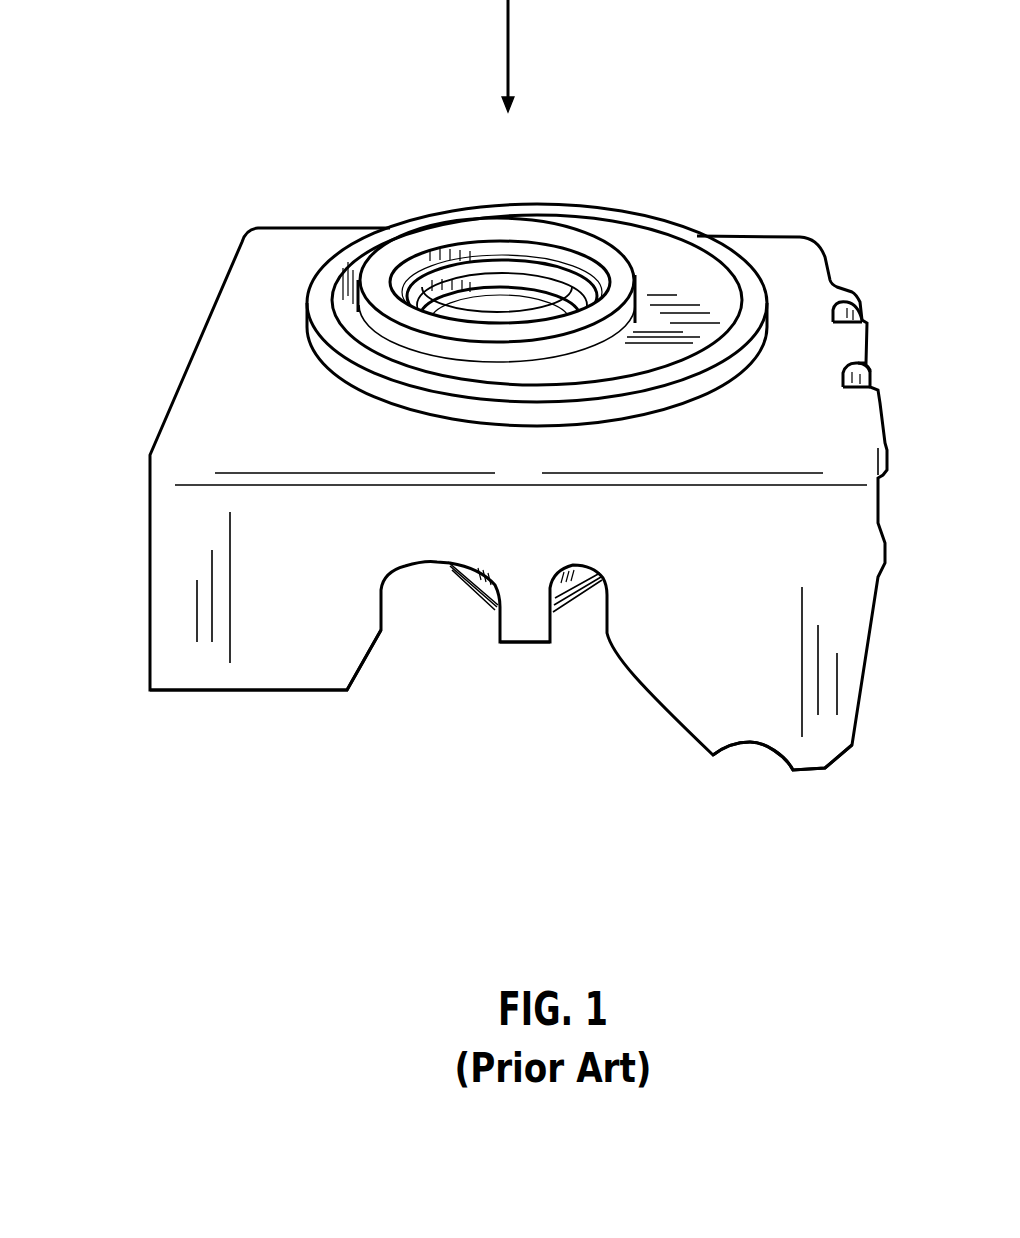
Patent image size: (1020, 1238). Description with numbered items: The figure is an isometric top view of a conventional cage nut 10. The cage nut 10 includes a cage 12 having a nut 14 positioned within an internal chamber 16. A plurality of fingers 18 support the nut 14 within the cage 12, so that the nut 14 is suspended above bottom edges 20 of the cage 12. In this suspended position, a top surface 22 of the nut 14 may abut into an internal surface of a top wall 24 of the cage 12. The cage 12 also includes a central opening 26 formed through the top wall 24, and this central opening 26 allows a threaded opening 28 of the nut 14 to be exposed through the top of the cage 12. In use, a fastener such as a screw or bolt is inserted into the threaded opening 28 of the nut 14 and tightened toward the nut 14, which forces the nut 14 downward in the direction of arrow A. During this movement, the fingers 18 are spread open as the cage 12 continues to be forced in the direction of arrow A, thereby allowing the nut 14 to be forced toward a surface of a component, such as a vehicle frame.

The cage nut 10 is at (165, 142).
The cage 12 is at (222, 328).
The nut 14 is at (652, 280).
The internal chamber 16 is at (428, 595).
The fingers 18 is at (523, 615).
The bottom edges 20 is at (347, 690).
The top surface 22 is at (673, 307).
The top wall 24 is at (307, 240).
The central opening 26 is at (615, 223).
The threaded opening 28 is at (450, 247).
The arrow A is at (508, 50).